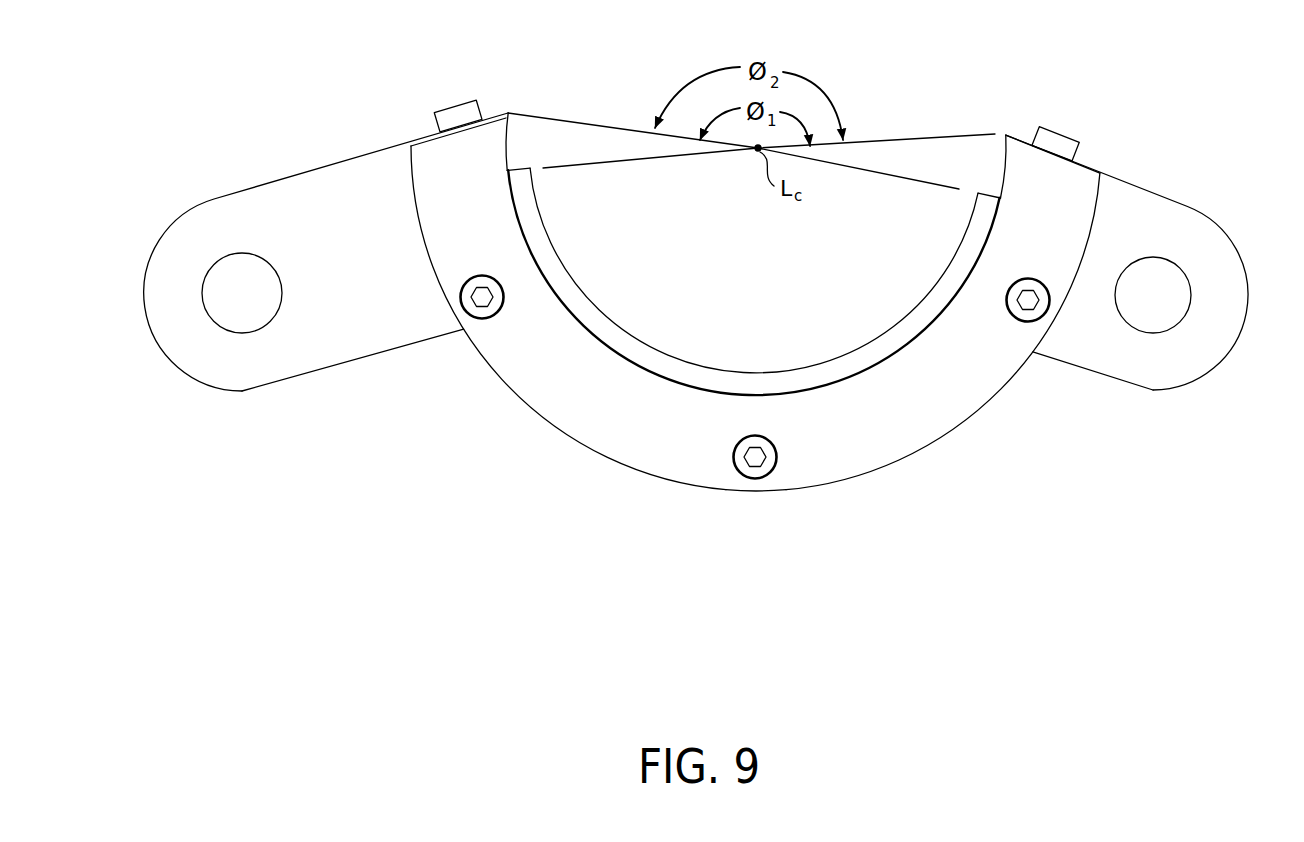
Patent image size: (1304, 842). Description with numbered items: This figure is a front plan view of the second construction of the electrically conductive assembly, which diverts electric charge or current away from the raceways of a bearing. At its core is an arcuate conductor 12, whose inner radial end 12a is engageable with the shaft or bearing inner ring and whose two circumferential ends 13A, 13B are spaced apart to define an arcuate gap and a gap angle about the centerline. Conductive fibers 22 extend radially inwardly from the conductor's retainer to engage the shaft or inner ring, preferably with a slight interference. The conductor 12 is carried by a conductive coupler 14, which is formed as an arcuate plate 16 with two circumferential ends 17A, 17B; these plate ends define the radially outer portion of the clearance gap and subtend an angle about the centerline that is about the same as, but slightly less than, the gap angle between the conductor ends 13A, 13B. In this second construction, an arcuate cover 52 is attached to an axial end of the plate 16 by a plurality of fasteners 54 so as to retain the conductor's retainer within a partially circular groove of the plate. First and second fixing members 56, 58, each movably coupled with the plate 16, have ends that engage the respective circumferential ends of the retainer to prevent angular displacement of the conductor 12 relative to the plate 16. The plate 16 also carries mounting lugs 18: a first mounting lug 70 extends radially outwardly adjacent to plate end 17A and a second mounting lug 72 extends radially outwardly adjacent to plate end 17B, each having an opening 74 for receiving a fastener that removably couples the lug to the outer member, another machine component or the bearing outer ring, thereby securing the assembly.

The arcuate conductor 12 is at (754, 270).
The inner radial end 12a is at (703, 359).
The circumferential end 13A is at (519, 170).
The circumferential end 13B is at (990, 196).
The conductive coupler 14 is at (592, 477).
The arcuate plate 16 is at (880, 469).
The circumferential end 17A is at (497, 112).
The circumferential end 17B is at (1015, 135).
The mounting lug 18 is at (291, 379).
The conductive fibers 22 is at (540, 233).
The arcuate cover 52 is at (677, 467).
The fasteners 54 is at (494, 316).
The first fixing member 56 is at (446, 108).
The second fixing member 58 is at (1063, 135).
The first mounting lug 70 is at (219, 212).
The second mounting lug 72 is at (1203, 228).
The opening 74 is at (256, 285).